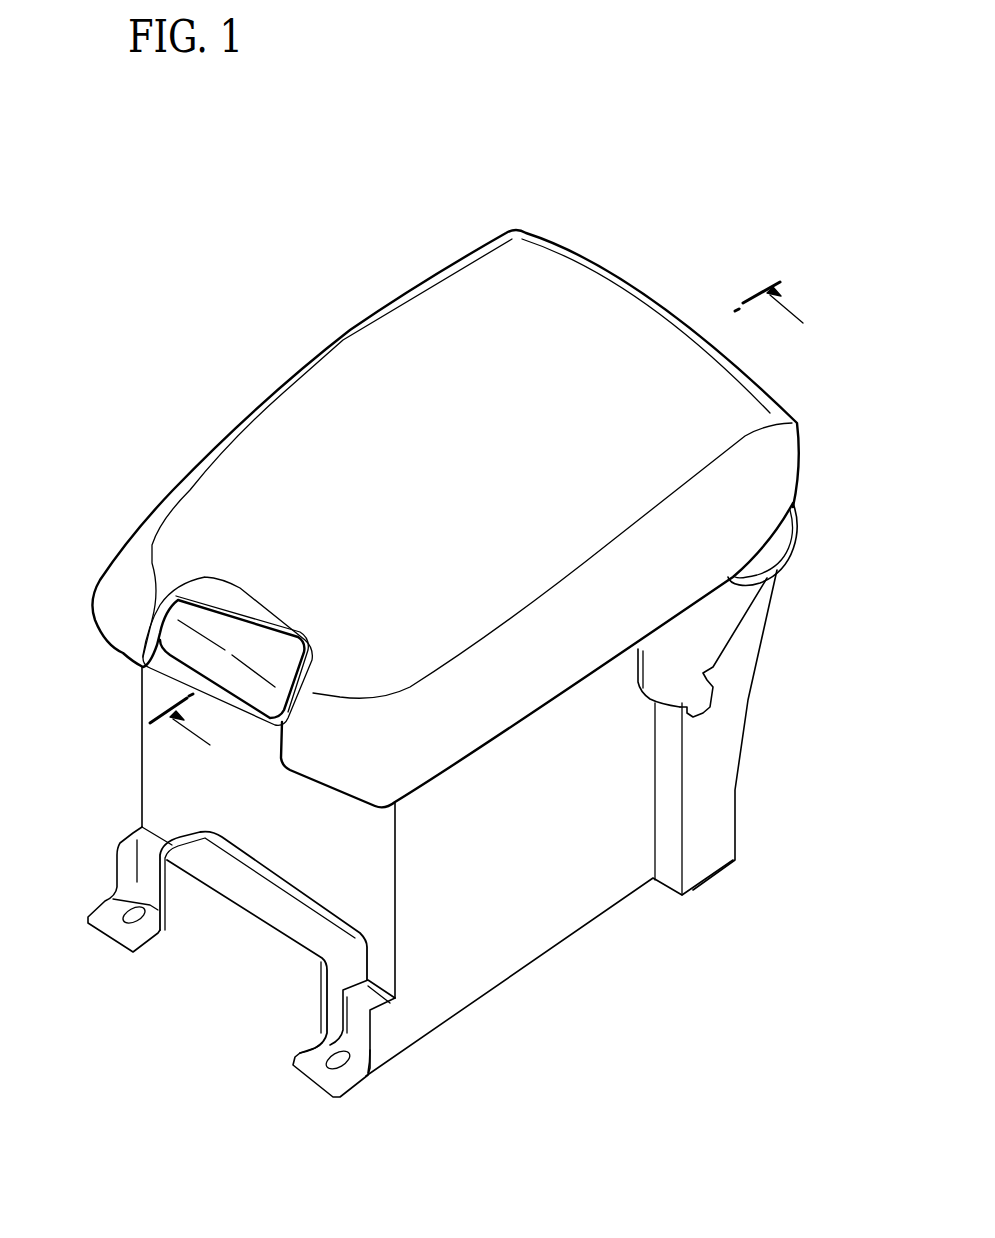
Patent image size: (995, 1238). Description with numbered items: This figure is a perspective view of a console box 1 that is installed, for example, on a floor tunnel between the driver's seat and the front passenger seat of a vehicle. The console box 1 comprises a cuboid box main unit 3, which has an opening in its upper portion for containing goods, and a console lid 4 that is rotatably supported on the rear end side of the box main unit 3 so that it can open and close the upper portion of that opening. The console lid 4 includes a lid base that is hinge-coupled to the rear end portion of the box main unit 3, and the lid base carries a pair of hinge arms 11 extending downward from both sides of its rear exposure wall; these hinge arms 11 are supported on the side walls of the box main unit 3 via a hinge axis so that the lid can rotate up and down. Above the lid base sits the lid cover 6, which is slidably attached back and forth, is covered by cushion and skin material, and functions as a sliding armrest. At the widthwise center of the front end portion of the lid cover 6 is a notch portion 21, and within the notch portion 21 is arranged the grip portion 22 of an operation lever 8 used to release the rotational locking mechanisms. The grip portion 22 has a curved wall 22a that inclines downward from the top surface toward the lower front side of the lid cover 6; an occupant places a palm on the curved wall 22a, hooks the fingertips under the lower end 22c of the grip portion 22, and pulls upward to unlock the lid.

The console box 1 is at (662, 226).
The box main unit 3 is at (588, 895).
The console lid 4 is at (445, 518).
The lid cover 6 is at (278, 421).
The operation lever 8 is at (223, 627).
The hinge arms 11 is at (703, 640).
The notch portion 21 is at (167, 613).
The grip portion 22 is at (152, 696).
The curved wall 22a is at (208, 648).
The lower end 22c is at (233, 700).